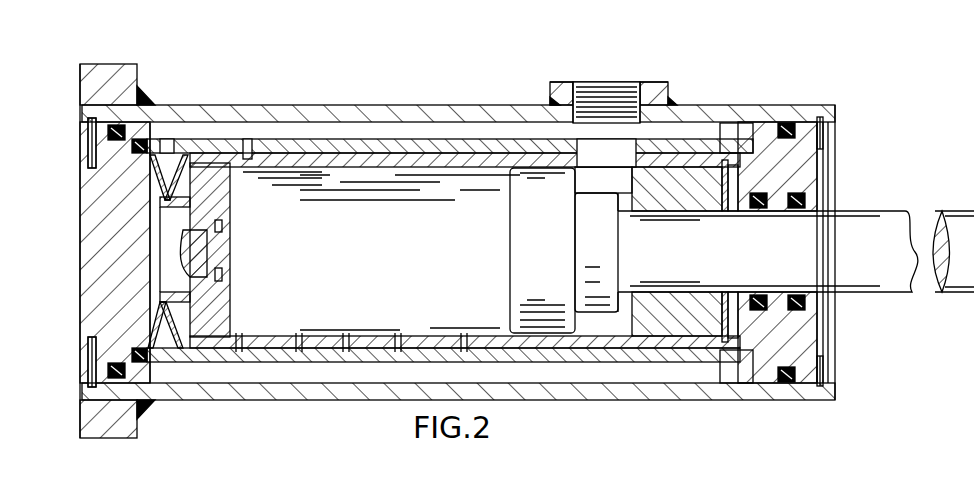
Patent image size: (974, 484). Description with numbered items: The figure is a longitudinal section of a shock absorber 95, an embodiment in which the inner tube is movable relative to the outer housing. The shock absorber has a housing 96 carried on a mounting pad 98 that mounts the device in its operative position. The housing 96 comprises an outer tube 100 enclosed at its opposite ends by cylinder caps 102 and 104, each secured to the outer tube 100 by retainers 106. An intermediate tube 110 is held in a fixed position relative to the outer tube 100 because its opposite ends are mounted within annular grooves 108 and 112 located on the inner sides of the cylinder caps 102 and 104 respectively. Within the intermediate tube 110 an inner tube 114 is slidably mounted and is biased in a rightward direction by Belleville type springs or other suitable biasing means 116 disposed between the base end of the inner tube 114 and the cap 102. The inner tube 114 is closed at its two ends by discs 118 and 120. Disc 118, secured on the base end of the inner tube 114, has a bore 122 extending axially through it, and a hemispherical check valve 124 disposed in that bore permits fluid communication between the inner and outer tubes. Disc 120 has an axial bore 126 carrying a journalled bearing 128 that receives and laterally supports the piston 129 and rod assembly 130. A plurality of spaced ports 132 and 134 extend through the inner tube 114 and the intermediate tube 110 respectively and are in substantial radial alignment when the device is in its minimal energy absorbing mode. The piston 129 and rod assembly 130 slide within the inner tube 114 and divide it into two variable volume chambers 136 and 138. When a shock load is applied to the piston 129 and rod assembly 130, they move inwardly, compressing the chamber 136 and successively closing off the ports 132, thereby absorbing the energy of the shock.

The shock absorber 95 is at (332, 86).
The housing 96 is at (836, 112).
The mounting pad 98 is at (138, 70).
The outer tube 100 is at (720, 108).
The cylinder cap 102 is at (80, 216).
The cylinder cap 104 is at (835, 333).
The retainers 106 is at (88, 131).
The annular groove 108 is at (147, 167).
The intermediate tube 110 is at (338, 130).
The annular groove 112 is at (740, 190).
The inner tube 114 is at (378, 168).
The Belleville type springs 116 is at (160, 318).
The disc 118 is at (232, 304).
The disc 120 is at (704, 193).
The bore 122 is at (225, 278).
The hemispherical check valve 124 is at (209, 244).
The axial bore 126 is at (658, 296).
The journalled bearing 128 is at (692, 291).
The piston 129 is at (509, 253).
The rod assembly 130 is at (862, 209).
The ports 132 is at (283, 340).
The ports 134 is at (265, 360).
The variable volume chamber 136 is at (380, 246).
The variable volume chamber 138 is at (603, 180).